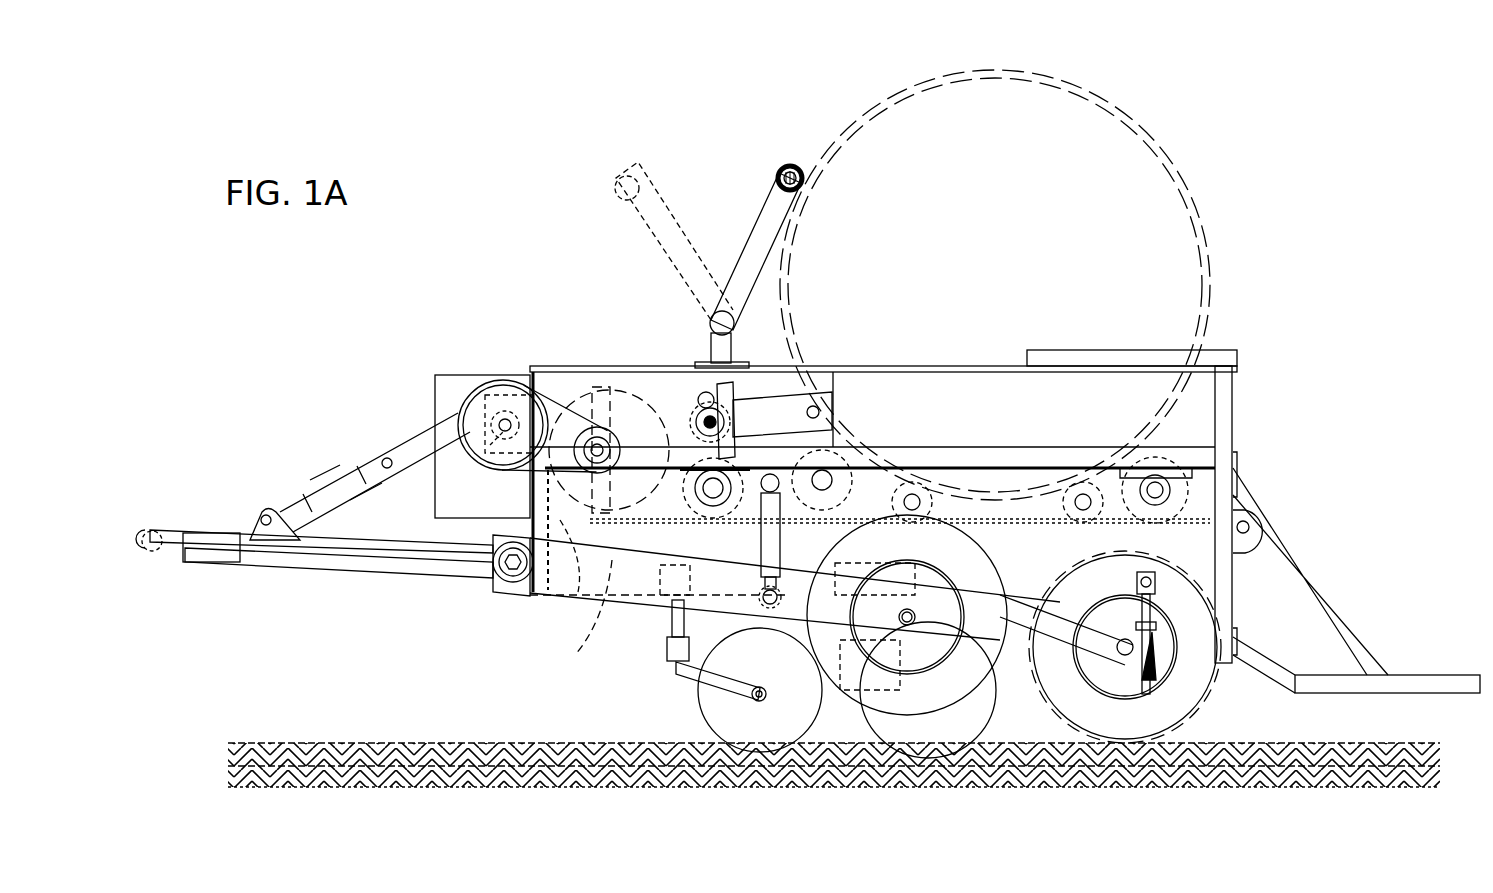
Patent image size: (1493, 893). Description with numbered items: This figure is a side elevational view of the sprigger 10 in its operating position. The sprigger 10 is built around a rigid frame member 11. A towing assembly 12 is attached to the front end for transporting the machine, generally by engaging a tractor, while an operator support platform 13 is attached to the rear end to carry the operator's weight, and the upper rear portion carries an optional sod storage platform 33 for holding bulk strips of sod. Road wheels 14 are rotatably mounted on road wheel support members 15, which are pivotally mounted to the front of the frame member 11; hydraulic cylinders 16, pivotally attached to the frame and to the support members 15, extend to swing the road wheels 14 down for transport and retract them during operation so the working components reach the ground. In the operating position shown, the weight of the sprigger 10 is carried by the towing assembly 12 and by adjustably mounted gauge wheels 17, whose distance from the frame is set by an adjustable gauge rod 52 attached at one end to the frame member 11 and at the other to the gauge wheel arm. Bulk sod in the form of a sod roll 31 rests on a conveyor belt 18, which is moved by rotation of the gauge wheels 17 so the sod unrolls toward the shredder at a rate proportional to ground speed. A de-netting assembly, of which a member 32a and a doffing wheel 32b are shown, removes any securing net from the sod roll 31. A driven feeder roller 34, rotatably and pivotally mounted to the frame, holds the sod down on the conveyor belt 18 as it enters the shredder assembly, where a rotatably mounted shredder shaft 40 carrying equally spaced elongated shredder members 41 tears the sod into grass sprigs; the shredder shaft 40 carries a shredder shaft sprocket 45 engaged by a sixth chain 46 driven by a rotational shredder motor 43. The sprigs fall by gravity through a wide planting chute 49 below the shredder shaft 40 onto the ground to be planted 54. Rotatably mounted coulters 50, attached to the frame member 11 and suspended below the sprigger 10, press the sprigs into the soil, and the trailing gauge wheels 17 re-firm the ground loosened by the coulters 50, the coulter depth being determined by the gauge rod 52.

The sprigger 10 is at (528, 272).
The rigid frame member 11 is at (1230, 400).
The towing assembly 12 is at (196, 540).
The operator support platform 13 is at (1442, 687).
The road wheels 14 is at (1005, 630).
The road wheel support members 15 is at (641, 600).
The hydraulic cylinders 16 is at (776, 548).
The gauge wheels 17 is at (1157, 712).
The conveyor belt 18 is at (1155, 540).
The sod roll 31 is at (1195, 190).
The pivot arm 32a is at (748, 237).
The doffing wheel 32b is at (785, 165).
The sod storage platform 33 is at (1127, 355).
The driven feeder roller 34 is at (692, 410).
The shredder shaft 40 is at (590, 438).
The shredder members 41 is at (632, 388).
The shredder motor 43 is at (487, 450).
The shredder shaft sprocket 45 is at (473, 400).
The sixth chain 46 is at (500, 378).
The planting chute 49 is at (605, 580).
The coulters 50 is at (762, 722).
The adjustable gauge rod 52 is at (1264, 674).
The ground to be planted 54 is at (484, 743).